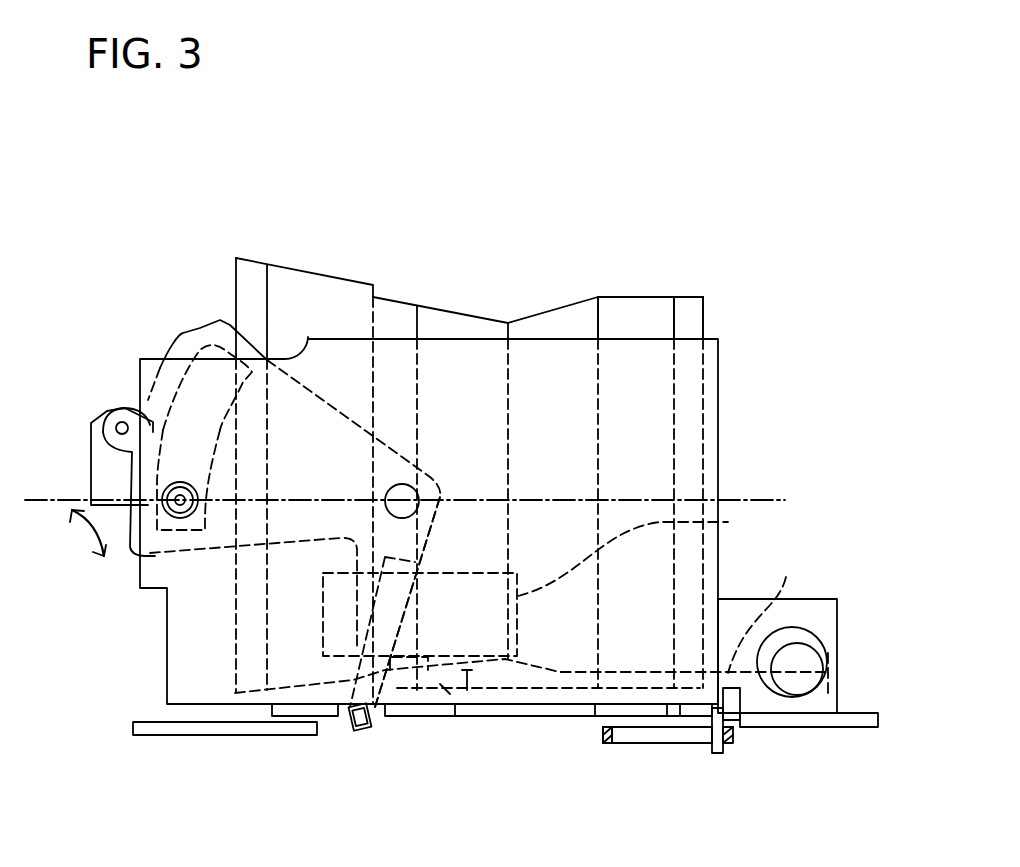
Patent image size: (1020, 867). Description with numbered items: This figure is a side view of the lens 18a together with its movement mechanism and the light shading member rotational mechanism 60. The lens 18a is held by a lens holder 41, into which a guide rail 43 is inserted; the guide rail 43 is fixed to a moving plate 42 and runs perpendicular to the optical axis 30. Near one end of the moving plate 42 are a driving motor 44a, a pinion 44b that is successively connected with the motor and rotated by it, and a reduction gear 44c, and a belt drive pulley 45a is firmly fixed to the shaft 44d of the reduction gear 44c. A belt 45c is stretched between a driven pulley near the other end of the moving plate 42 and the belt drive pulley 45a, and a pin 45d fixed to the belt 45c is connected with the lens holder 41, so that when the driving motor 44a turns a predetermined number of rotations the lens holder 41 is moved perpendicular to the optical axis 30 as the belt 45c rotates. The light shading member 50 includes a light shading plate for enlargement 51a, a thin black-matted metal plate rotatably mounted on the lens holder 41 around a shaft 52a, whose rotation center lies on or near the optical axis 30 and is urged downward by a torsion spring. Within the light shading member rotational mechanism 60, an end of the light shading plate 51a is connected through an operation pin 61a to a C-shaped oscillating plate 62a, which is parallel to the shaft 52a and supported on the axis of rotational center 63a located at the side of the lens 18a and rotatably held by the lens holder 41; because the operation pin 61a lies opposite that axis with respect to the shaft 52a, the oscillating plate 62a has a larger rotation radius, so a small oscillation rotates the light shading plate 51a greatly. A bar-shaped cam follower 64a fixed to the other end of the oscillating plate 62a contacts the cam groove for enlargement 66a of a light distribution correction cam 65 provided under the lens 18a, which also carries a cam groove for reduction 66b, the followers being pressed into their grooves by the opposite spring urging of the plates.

The lens 18a is at (622, 297).
The optical axis 30 is at (733, 500).
The lens holder 41 is at (722, 357).
The moving plate 42 is at (145, 731).
The guide rail 43 is at (800, 672).
The driving motor 44a is at (551, 585).
The pinion 44b is at (448, 690).
The reduction gear 44c is at (772, 610).
The shaft of the reduction gear 44d is at (668, 713).
The belt drive pulley 45a is at (672, 745).
The belt 45c is at (603, 744).
The pin 45d is at (718, 753).
The light shading member 50 is at (76, 453).
The light shading plate for enlargement 51a is at (93, 468).
The shaft 52a is at (180, 507).
The light shading member rotational mechanism 60 is at (218, 305).
The operation pin 61a is at (122, 421).
The oscillating plate 62a is at (178, 337).
The axis of rotational center of the oscillating plate 63a is at (400, 495).
The cam follower 64a is at (356, 732).
The light distribution correction cam 65 is at (505, 712).
The cam groove for enlargement 66a is at (380, 716).
The cam groove for reduction 66b is at (340, 716).